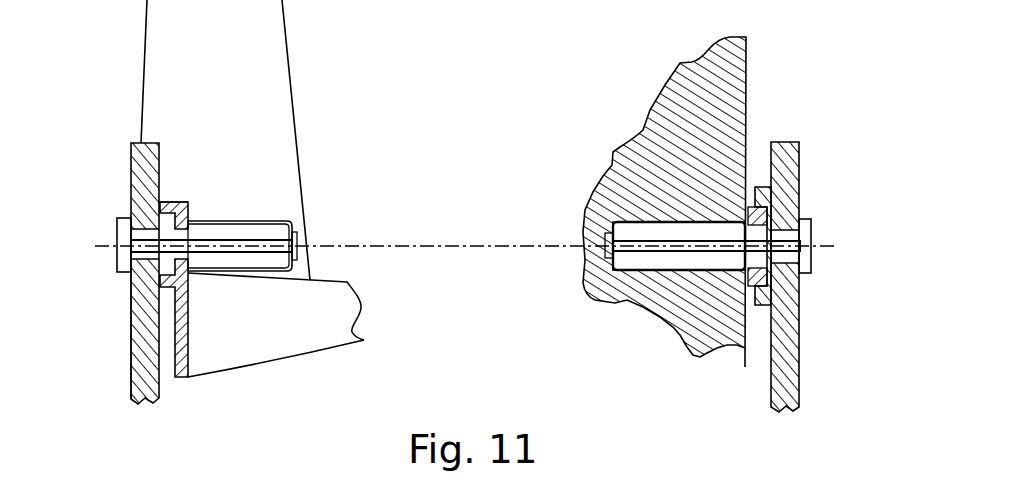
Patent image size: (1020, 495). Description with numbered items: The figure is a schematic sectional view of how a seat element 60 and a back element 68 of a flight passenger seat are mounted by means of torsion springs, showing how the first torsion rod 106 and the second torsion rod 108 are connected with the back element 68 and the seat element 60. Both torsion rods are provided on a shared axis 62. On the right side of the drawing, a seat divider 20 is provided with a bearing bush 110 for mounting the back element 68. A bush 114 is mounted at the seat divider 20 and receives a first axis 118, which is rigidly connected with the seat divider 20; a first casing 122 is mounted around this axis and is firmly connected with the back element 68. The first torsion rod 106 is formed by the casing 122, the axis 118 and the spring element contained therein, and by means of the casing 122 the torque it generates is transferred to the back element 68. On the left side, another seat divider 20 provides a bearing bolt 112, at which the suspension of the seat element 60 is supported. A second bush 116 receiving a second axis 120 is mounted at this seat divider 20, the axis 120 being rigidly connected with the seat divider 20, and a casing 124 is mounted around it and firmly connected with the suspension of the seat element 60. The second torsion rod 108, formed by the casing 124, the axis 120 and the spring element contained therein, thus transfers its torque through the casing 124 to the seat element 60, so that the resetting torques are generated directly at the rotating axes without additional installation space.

The seat divider 20 is at (142, 175).
The seat element 60 is at (277, 306).
The shared axis 62 is at (190, 358).
The back element 68 is at (650, 133).
The first torsion rod 106 is at (585, 208).
The second torsion rod 108 is at (198, 207).
The bearing bush 110 is at (800, 282).
The bearing bolt 112 is at (120, 258).
The bush 114 is at (803, 257).
The second bush 116 is at (138, 313).
The first axis 118 is at (645, 260).
The second axis 120 is at (272, 233).
The first casing 122 is at (708, 272).
The casing 124 is at (210, 215).